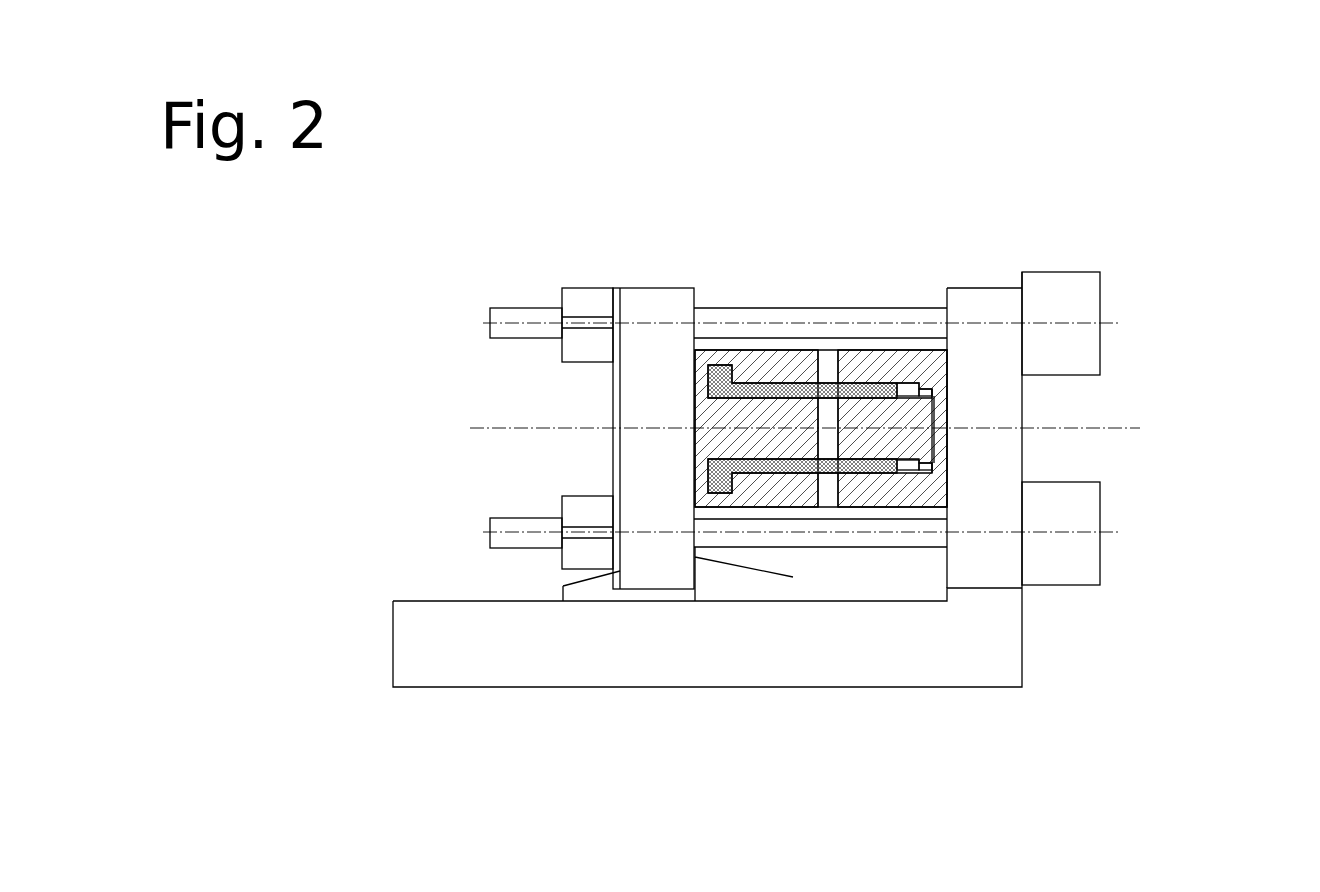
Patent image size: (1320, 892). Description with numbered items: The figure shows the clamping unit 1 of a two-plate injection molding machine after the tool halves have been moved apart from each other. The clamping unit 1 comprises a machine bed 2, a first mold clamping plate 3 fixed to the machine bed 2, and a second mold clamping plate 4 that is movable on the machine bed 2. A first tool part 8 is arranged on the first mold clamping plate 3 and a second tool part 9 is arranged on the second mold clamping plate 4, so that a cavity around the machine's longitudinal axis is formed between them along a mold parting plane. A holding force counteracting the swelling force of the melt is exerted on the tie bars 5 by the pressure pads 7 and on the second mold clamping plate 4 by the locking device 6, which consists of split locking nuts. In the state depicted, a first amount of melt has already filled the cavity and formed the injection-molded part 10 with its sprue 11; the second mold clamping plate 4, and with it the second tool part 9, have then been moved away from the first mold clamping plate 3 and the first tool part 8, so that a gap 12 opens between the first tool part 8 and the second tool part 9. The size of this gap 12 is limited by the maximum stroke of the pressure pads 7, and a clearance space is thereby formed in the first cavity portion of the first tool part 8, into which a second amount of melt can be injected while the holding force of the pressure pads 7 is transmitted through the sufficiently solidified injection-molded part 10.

The clamping unit 1 is at (1138, 250).
The machine bed 2 is at (997, 647).
The first mold clamping plate 3 is at (1005, 395).
The second mold clamping plate 4 is at (652, 302).
The tie bar 5 is at (505, 318).
The locking device 6 is at (583, 303).
The pressure pad 7 is at (1052, 288).
The first tool part 8 is at (822, 355).
The second tool part 9 is at (767, 367).
The injection-molded part 10 is at (808, 465).
The sprue 11 is at (945, 428).
The gap 12 is at (823, 370).